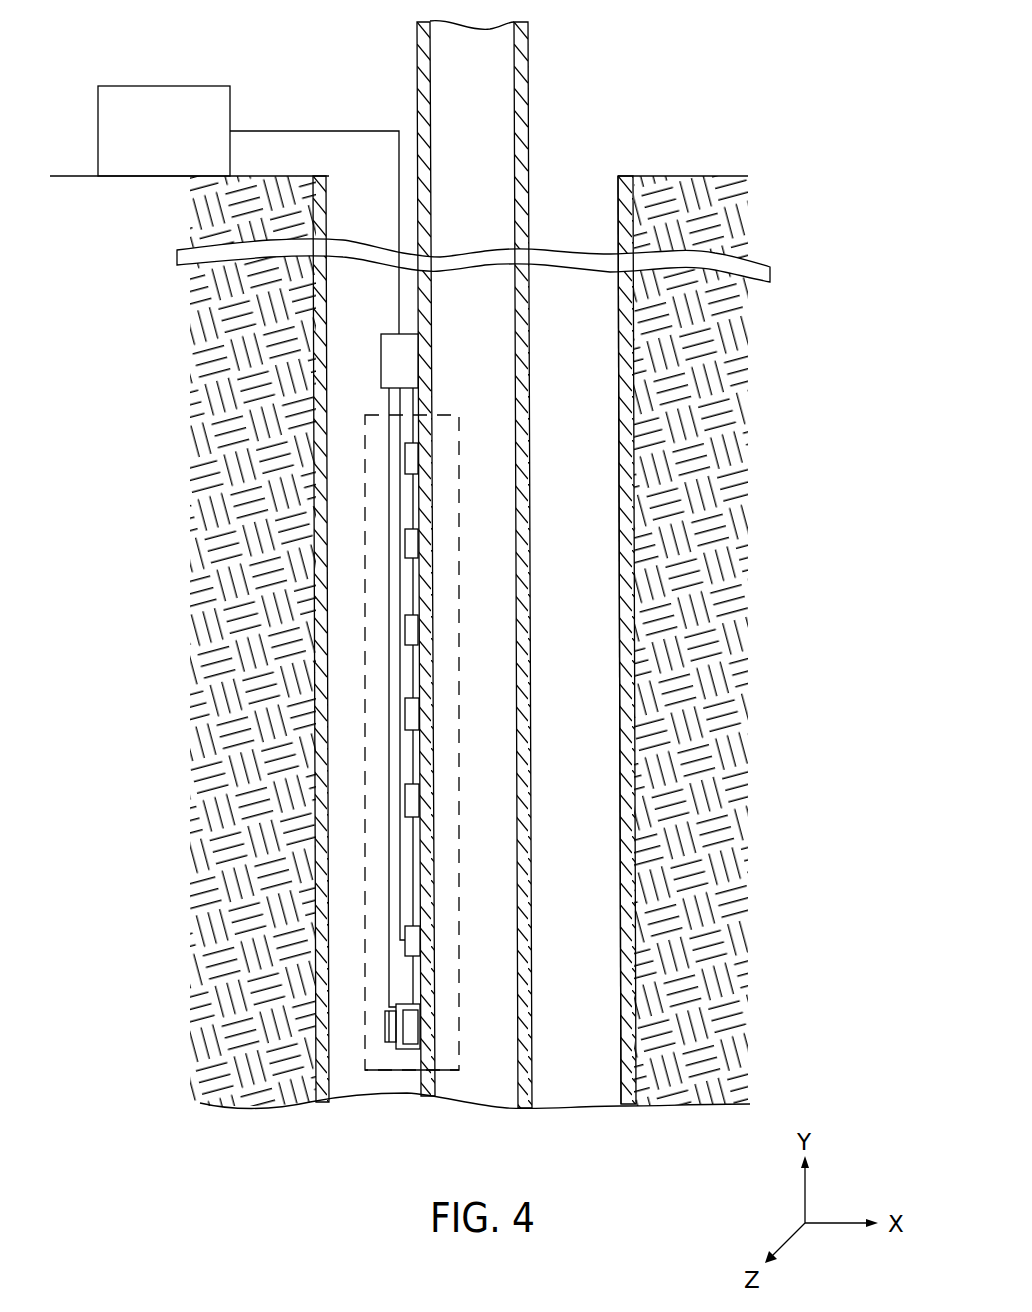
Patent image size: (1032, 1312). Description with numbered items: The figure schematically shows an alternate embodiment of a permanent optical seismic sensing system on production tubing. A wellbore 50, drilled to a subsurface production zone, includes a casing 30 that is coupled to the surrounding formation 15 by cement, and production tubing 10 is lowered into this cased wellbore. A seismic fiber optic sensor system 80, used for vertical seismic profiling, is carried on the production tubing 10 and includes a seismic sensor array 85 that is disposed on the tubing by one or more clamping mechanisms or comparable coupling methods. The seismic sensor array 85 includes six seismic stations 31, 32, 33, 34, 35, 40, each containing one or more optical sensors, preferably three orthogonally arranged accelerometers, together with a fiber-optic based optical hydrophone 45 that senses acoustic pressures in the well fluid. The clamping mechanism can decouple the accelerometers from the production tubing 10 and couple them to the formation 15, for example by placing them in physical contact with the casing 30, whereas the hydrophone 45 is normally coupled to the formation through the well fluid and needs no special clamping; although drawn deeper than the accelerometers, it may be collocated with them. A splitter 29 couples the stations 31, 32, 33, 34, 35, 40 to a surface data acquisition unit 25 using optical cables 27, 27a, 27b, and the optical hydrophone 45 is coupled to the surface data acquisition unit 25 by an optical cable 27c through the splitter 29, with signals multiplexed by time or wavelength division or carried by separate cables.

The production tubing 10 is at (528, 63).
The formation 15 is at (690, 530).
The surface data acquisition unit 25 is at (175, 145).
The optical cable 27 is at (287, 131).
The optical cable 27a is at (413, 402).
The optical cable 27b is at (400, 865).
The optical cable 27c is at (389, 977).
The splitter 29 is at (381, 362).
The casing 30 is at (622, 602).
The seismic station 31 is at (413, 458).
The seismic station 32 is at (413, 543).
The seismic station 33 is at (413, 630).
The seismic station 34 is at (413, 713).
The seismic station 35 is at (413, 800).
The seismic station 40 is at (413, 940).
The optical hydrophone 45 is at (410, 1027).
The wellbore 50 is at (634, 487).
The seismic fiber optic sensor system 80 is at (352, 1043).
The seismic sensor array 85 is at (377, 1070).